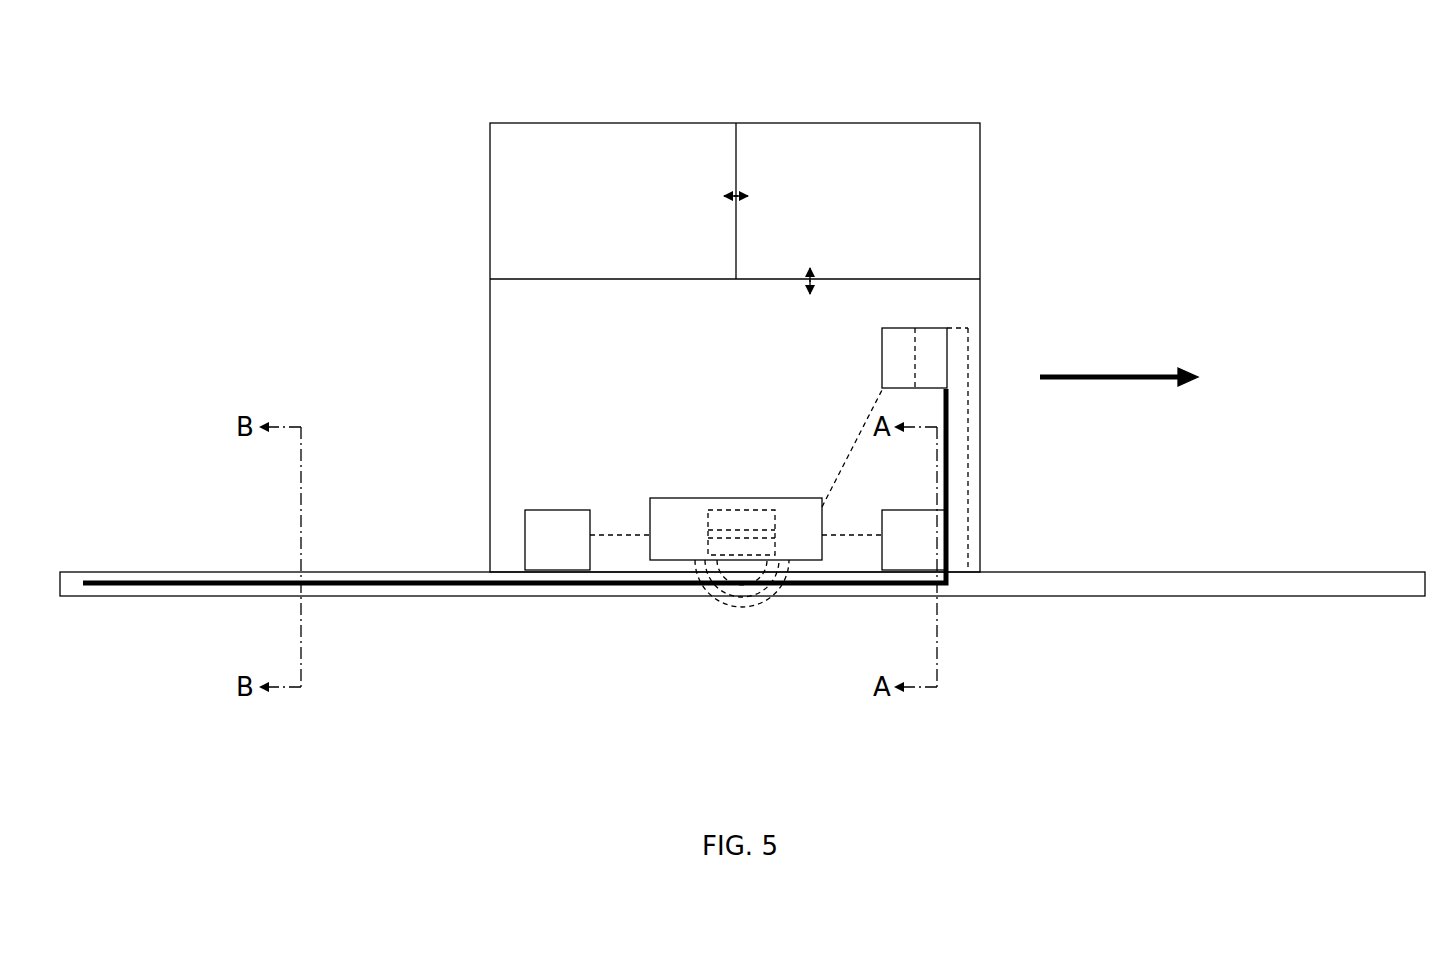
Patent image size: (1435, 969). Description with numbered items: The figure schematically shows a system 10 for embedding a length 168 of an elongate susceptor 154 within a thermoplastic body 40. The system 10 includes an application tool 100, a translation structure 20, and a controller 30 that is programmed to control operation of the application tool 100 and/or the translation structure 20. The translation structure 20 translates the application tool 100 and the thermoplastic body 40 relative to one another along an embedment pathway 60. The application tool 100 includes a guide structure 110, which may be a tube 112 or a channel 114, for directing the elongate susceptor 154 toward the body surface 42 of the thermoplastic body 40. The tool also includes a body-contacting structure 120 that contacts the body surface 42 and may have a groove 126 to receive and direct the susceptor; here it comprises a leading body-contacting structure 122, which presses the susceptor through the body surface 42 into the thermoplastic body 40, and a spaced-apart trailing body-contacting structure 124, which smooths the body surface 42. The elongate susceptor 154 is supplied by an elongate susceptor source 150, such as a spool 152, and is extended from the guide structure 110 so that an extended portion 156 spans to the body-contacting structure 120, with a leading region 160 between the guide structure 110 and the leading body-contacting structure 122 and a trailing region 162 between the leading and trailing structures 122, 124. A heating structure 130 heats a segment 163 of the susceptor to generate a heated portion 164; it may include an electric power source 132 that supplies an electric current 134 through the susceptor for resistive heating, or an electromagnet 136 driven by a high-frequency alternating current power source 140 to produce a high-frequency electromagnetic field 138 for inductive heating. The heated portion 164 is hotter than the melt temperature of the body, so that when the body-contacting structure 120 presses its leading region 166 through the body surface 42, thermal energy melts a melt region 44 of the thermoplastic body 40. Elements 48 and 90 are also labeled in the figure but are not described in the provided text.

The system 10 is at (196, 95).
The translation structure 20 is at (515, 214).
The controller 30 is at (858, 145).
The thermoplastic body 40 is at (1358, 598).
The body surface 42 is at (1360, 573).
The melt region 44 is at (912, 603).
The plate body 48 is at (1312, 590).
The embedment pathway 60 is at (1122, 374).
The environment 90 is at (1188, 637).
The application tool 100 is at (488, 325).
The guide structure 110 is at (963, 324).
The tube 112 is at (970, 457).
The channel 114 is at (968, 490).
The body-contacting structure 120 is at (560, 508).
The leading body-contacting structure 122 is at (883, 508).
The trailing body-contacting structure 124 is at (584, 508).
The groove 126 is at (918, 545).
The heating structure 130 is at (685, 496).
The electric power source 132 is at (717, 508).
The electric current 134 is at (865, 415).
The electromagnet 136 is at (710, 548).
The high-frequency electromagnetic field 138 is at (757, 612).
The high-frequency alternating current power source 140 is at (737, 508).
The elongate susceptor source 150 is at (890, 345).
The spool 152 is at (882, 367).
The elongate susceptor 154 is at (372, 591).
The extended portion 156 is at (992, 603).
The leading region 160 is at (954, 510).
The trailing region 162 is at (640, 605).
The segment 163 is at (660, 600).
The heated portion 164 is at (680, 598).
The leading region of heated portion 166 is at (960, 603).
The length 168 is at (423, 572).